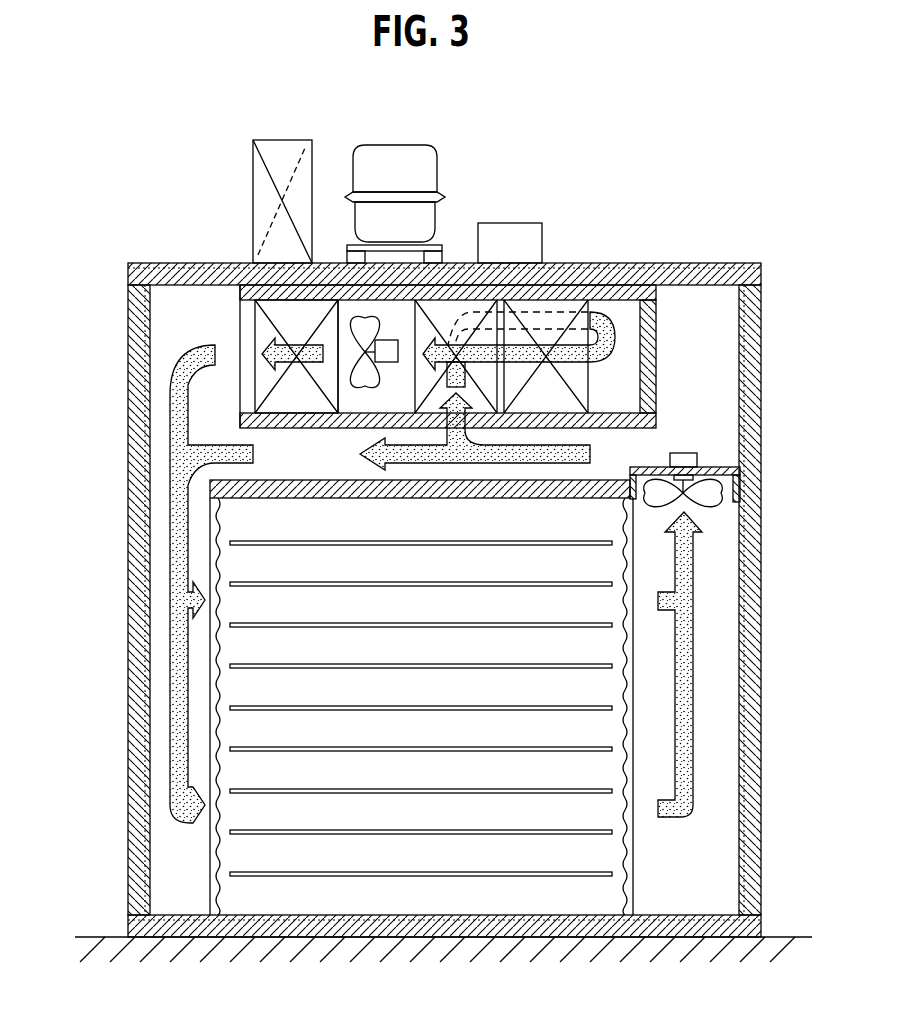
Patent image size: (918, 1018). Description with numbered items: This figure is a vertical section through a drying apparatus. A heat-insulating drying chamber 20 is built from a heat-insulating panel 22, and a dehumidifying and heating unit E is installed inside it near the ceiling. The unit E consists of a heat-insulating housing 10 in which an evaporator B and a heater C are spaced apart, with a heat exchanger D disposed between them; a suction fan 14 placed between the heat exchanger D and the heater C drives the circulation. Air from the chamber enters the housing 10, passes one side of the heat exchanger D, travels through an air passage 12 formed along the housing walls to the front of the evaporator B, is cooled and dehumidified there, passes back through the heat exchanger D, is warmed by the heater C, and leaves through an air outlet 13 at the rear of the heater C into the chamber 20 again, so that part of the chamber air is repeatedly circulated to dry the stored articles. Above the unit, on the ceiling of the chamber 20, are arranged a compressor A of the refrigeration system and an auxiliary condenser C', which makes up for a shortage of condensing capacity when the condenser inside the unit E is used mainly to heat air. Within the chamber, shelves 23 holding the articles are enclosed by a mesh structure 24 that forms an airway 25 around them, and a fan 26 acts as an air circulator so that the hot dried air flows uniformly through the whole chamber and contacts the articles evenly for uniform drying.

The heat-insulating housing 10 is at (457, 290).
The air passage 12 is at (619, 325).
The air outlet 13 is at (240, 333).
The suction fan 14 is at (372, 336).
The heat-insulating drying chamber 20 is at (704, 256).
The heat-insulating panel 22 is at (128, 584).
The shelves 23 is at (420, 541).
The mesh structure 24 is at (222, 690).
The airway 25 is at (170, 697).
The fan 26 is at (713, 500).
The compressor A is at (398, 147).
The evaporator B is at (590, 376).
The heater C is at (292, 401).
The auxiliary condenser C' is at (282, 176).
The heat exchanger D is at (415, 378).
The dehumidifying and heating unit E is at (664, 351).